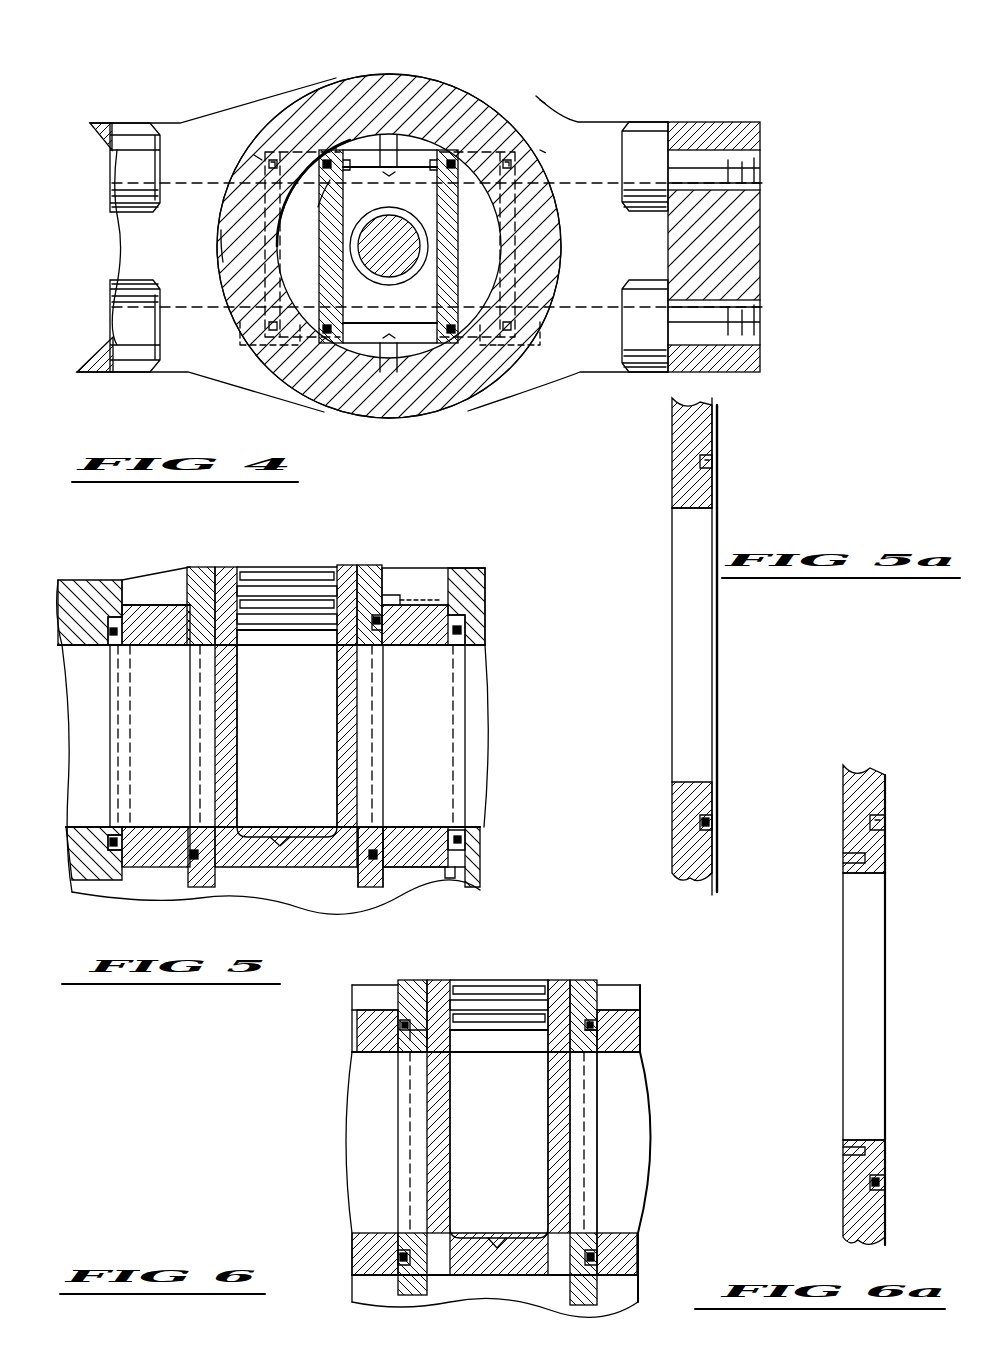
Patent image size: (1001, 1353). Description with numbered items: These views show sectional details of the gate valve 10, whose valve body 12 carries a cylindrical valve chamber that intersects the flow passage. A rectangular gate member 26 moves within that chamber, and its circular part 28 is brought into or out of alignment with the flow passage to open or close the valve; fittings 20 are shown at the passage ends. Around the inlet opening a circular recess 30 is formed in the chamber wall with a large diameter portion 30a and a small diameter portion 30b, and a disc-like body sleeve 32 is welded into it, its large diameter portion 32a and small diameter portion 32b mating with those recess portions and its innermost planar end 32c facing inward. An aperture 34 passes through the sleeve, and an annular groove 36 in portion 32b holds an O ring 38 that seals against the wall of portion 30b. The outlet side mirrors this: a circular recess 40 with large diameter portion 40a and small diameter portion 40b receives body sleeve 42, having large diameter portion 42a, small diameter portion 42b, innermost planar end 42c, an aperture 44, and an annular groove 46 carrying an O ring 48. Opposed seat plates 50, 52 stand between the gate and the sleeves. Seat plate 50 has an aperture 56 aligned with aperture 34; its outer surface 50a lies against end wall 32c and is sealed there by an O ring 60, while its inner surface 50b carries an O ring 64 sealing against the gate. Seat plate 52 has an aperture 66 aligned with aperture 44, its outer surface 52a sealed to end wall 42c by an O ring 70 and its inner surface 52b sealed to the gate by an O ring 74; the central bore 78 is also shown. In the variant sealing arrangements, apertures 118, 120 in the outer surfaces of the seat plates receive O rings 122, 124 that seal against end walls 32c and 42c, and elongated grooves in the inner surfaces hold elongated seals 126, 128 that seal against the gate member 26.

In FIG. 4, the gate valve 10 is at (518, 66).
In FIG. 4, the valve body 12 is at (414, 132).
In FIG. 5, the valve body 12 is at (80, 595).
In FIG. 4, the conduit fitting 20 is at (188, 132).
In FIG. 4, the gate member 26 is at (415, 326).
In FIG. 5, the gate member 26 is at (240, 778).
In FIG. 6, the gate member 26 is at (452, 1160).
In FIG. 4, the circular part 28 is at (397, 150).
In FIG. 4, the circular recess 30 is at (255, 386).
In FIG. 5, the circular recess 30 is at (142, 598).
In FIG. 4, the large diameter portion 30a is at (300, 380).
In FIG. 5, the large diameter portion 30a is at (165, 605).
In FIG. 4, the small diameter portion 30b is at (240, 368).
In FIG. 5, the small diameter portion 30b is at (122, 617).
In FIG. 4, the body sleeve 32 is at (326, 172).
In FIG. 5, the body sleeve 32 is at (160, 650).
In FIG. 6, the body sleeve 32 is at (358, 1030).
In FIG. 4, the large diameter portion 32a is at (336, 148).
In FIG. 5, the large diameter portion 32a is at (148, 870).
In FIG. 4, the small diameter portion 32b is at (254, 155).
In FIG. 5, the small diameter portion 32b is at (122, 845).
In FIG. 5, the innermost planar end 32c is at (230, 632).
In FIG. 6, the innermost planar end 32c is at (392, 1062).
In FIG. 5, the aperture 34 is at (112, 748).
In FIG. 5, the annular groove 36 is at (112, 650).
In FIG. 4, the O ring 38 is at (216, 229).
In FIG. 5, the O ring 38 is at (112, 850).
In FIG. 4, the circular recess 40 is at (570, 386).
In FIG. 5, the circular recess 40 is at (455, 595).
In FIG. 4, the large diameter portion 40a is at (498, 398).
In FIG. 5, the large diameter portion 40a is at (415, 600).
In FIG. 4, the small diameter portion 40b is at (548, 338).
In FIG. 5, the small diameter portion 40b is at (490, 578).
In FIG. 4, the body sleeve 42 is at (572, 113).
In FIG. 5, the body sleeve 42 is at (462, 652).
In FIG. 6, the body sleeve 42 is at (620, 1055).
In FIG. 4, the large diameter portion 42a is at (548, 100).
In FIG. 5, the large diameter portion 42a is at (420, 870).
In FIG. 4, the small diameter portion 42b is at (548, 150).
In FIG. 5, the small diameter portion 42b is at (470, 878).
In FIG. 5, the innermost planar end 42c is at (380, 640).
In FIG. 6, the innermost planar end 42c is at (640, 1048).
In FIG. 5, the aperture 44 is at (460, 730).
In FIG. 6, the aperture 44 is at (640, 1140).
In FIG. 5, the annular groove 46 is at (455, 645).
In FIG. 4, the O ring 48 is at (560, 212).
In FIG. 5, the O ring 48 is at (468, 838).
In FIG. 4, the seat plate 50 is at (333, 150).
In FIG. 5, the seat plate 50 is at (212, 645).
In FIG. 6, the seat plate 50 is at (425, 985).
In FIG. 5, the outer surface 50a is at (212, 690).
In FIG. 6, the outer surface 50a is at (405, 990).
In FIG. 6, the inner surface 50b is at (478, 983).
In FIG. 4, the seat plate 52 is at (450, 150).
In FIG. 5, the seat plate 52 is at (370, 572).
In FIG. 5A, the seat plate 52 is at (676, 500).
In FIG. 6A, the seat plate 52 is at (858, 772).
In FIG. 6, the seat plate 52 is at (580, 985).
In FIG. 6, the outer surface 52a is at (640, 986).
In FIG. 6, the inner surface 52b is at (552, 980).
In FIG. 5, the aperture 56 is at (205, 745).
In FIG. 6, the aperture 56 is at (410, 1130).
In FIG. 4, the O ring 60 is at (223, 262).
In FIG. 4, the O ring 64 is at (318, 207).
In FIG. 5, the aperture 66 is at (355, 745).
In FIG. 5A, the aperture 66 is at (690, 640).
In FIG. 6A, the aperture 66 is at (888, 990).
In FIG. 6, the aperture 66 is at (553, 1160).
In FIG. 4, the O ring 70 is at (459, 322).
In FIG. 4, the O ring 74 is at (428, 321).
In FIG. 4, the central bore 78 is at (385, 263).
In FIG. 5, the aperture 118 is at (240, 822).
In FIG. 6, the aperture 118 is at (445, 1035).
In FIG. 5, the aperture 120 is at (358, 862).
In FIG. 5A, the aperture 120 is at (715, 795).
In FIG. 6A, the aperture 120 is at (855, 835).
In FIG. 6, the aperture 120 is at (580, 1035).
In FIG. 5, the O ring 122 is at (203, 862).
In FIG. 6, the O ring 122 is at (420, 1255).
In FIG. 5, the O ring 124 is at (370, 862).
In FIG. 5A, the O ring 124 is at (718, 822).
In FIG. 6A, the O ring 124 is at (884, 1184).
In FIG. 6, the O ring 124 is at (600, 1255).
In FIG. 6, the elongated seal 126 is at (452, 1084).
In FIG. 6A, the elongated seal 128 is at (852, 865).
In FIG. 6, the elongated seal 128 is at (555, 1080).